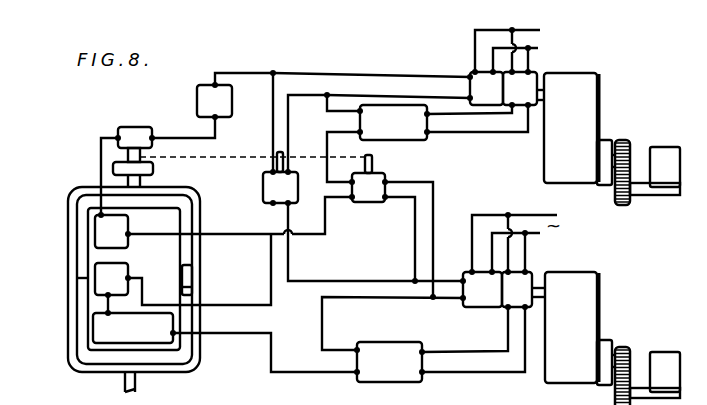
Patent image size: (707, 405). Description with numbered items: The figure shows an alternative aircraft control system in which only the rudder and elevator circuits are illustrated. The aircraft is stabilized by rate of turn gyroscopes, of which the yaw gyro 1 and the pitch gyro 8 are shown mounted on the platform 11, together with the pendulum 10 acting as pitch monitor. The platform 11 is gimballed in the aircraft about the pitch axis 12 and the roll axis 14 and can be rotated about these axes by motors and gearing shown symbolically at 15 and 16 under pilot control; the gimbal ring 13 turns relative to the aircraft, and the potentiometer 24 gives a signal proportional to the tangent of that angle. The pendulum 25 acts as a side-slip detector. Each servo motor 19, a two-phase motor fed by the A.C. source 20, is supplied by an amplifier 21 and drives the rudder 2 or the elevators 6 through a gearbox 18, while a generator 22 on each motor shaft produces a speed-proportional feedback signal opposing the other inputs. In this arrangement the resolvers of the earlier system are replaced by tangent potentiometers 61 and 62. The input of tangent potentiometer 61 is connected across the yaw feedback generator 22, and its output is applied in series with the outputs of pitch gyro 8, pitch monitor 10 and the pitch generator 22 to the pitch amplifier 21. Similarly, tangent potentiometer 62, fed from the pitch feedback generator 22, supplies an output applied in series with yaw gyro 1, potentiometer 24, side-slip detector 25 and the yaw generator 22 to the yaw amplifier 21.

The rate of turn gyroscope 1 is at (107, 223).
The rudder 2 is at (665, 175).
The elevators 6 is at (660, 365).
The rate of pitch gyroscope 8 is at (166, 337).
The pendulum 10 is at (118, 273).
The platform 11 is at (167, 217).
The pitch axis 12 is at (77, 282).
The gimbal ring 13 is at (193, 263).
The roll axis 14 is at (133, 182).
The motor and gearing 15 is at (188, 287).
The motor and gearing 16 is at (155, 170).
The gearbox 18 is at (585, 100).
The motor 19 is at (527, 87).
The A.C. source 20 is at (528, 49).
The amplifier 21 is at (382, 135).
The generator 22 is at (485, 83).
The potentiometer 24 is at (128, 133).
The pendulum 25 is at (208, 102).
The tangent potentiometer 61 is at (270, 187).
The tangent potentiometer 62 is at (372, 193).